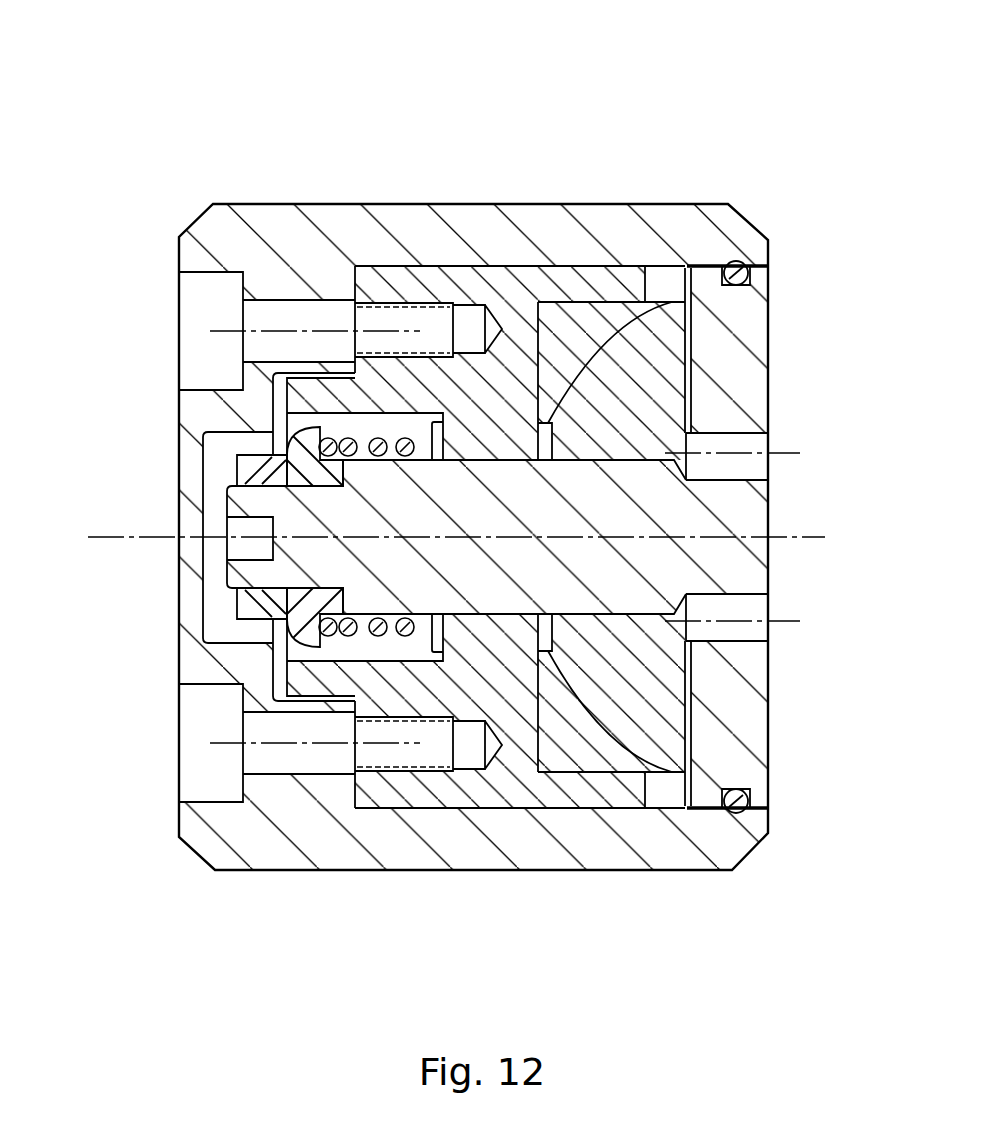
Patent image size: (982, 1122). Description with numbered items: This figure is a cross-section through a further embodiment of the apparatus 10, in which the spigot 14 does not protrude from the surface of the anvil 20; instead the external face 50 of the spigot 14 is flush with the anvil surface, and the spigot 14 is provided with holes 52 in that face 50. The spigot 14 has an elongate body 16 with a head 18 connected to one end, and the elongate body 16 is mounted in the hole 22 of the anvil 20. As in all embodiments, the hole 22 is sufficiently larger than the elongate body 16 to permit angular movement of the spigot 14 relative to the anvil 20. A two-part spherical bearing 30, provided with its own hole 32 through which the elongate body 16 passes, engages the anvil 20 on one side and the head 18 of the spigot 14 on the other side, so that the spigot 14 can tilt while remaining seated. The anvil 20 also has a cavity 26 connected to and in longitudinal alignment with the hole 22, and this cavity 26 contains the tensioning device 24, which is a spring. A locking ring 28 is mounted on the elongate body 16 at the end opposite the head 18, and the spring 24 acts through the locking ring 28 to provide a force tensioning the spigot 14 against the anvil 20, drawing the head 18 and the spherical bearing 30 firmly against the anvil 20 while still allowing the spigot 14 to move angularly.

The apparatus 10 is at (227, 140).
The spigot 14 is at (740, 558).
The elongate body 16 is at (505, 490).
The head 18 is at (720, 372).
The anvil 20 is at (188, 617).
The hole 22 is at (482, 623).
The tensioning device 24 is at (393, 430).
The cavity 26 is at (323, 422).
The locking ring 28 is at (225, 458).
The two-part spherical bearing 30 is at (642, 365).
The hole 32 is at (625, 620).
The external face 50 is at (760, 730).
The holes 52 is at (758, 465).